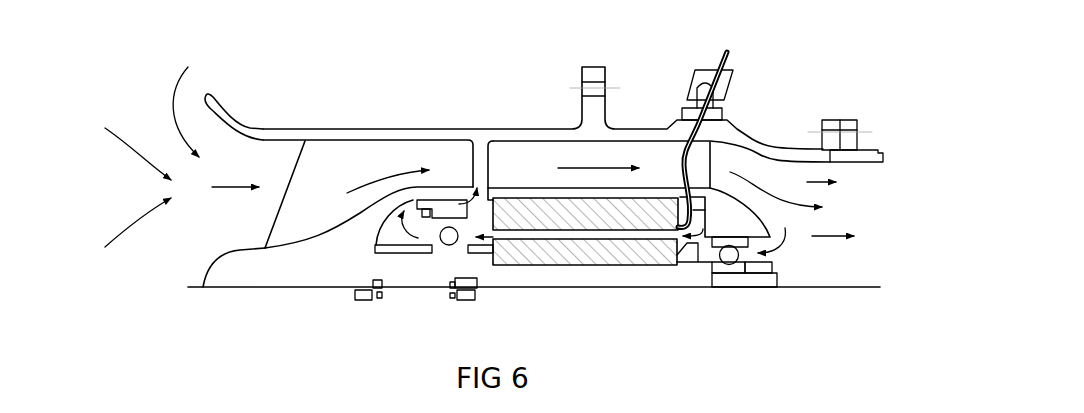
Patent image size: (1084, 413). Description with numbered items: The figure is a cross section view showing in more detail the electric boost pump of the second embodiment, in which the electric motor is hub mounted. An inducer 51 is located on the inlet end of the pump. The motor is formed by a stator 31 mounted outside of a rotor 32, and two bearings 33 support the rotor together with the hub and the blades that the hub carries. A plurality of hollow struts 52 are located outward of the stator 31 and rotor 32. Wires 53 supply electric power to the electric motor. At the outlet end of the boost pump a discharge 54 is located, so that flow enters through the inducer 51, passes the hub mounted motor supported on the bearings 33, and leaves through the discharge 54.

The stator 31 is at (552, 212).
The rotor 32 is at (622, 245).
The bearings 33 is at (447, 240).
The inducer 51 is at (353, 163).
The hollow struts 52 is at (530, 165).
The wires 53 is at (718, 58).
The discharge 54 is at (840, 215).